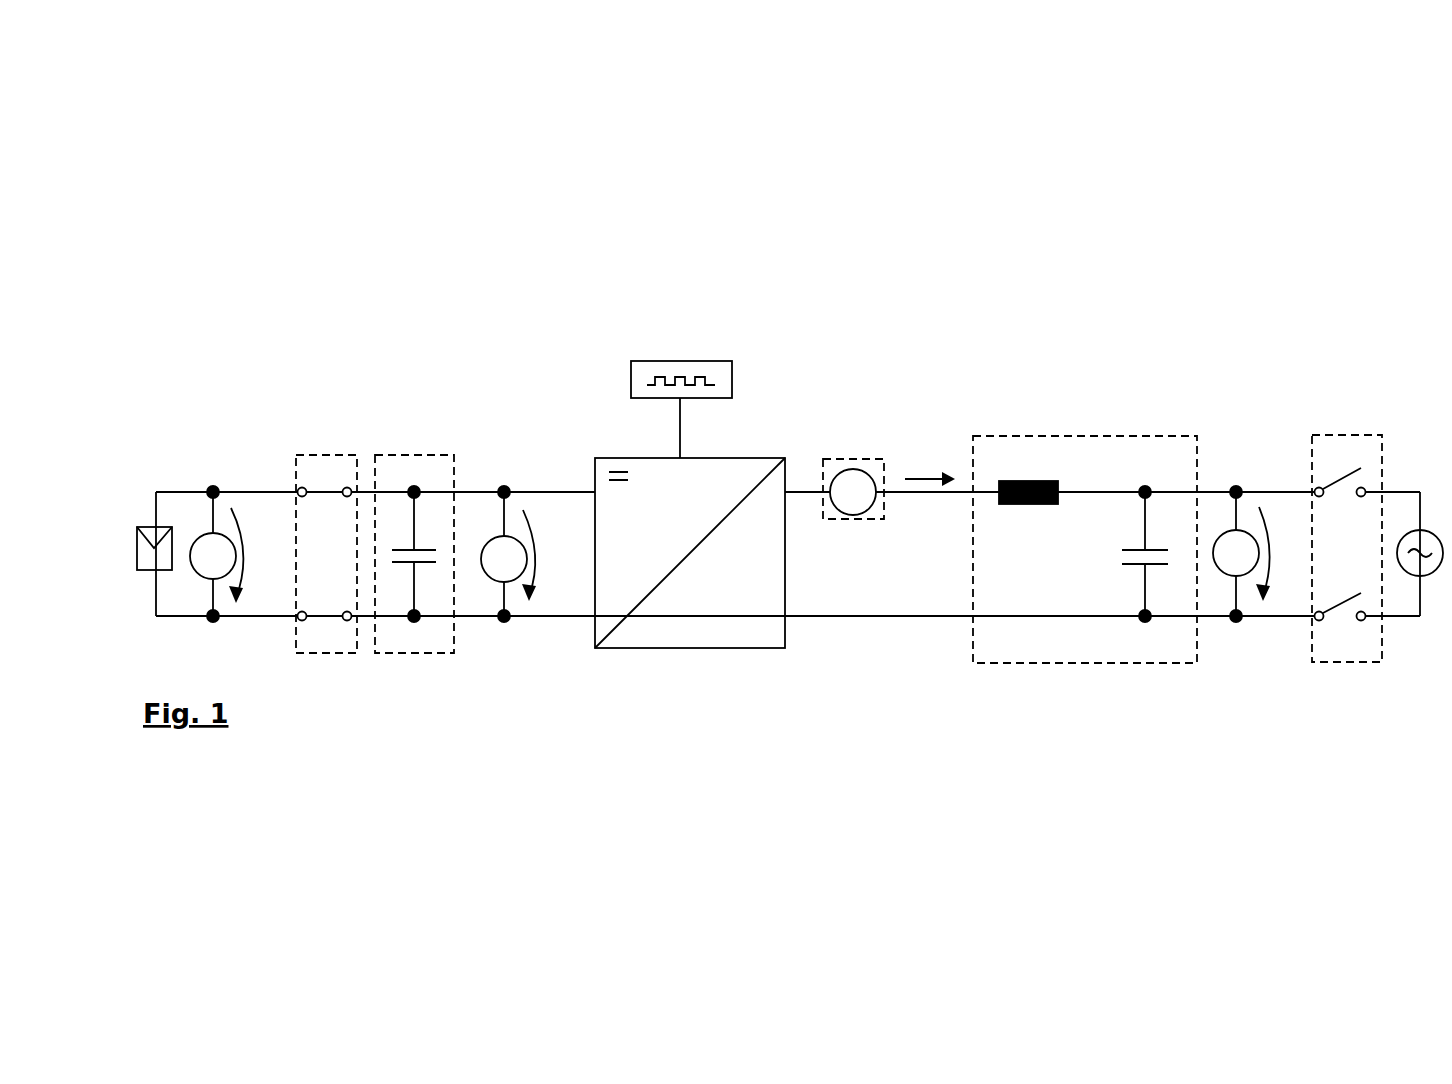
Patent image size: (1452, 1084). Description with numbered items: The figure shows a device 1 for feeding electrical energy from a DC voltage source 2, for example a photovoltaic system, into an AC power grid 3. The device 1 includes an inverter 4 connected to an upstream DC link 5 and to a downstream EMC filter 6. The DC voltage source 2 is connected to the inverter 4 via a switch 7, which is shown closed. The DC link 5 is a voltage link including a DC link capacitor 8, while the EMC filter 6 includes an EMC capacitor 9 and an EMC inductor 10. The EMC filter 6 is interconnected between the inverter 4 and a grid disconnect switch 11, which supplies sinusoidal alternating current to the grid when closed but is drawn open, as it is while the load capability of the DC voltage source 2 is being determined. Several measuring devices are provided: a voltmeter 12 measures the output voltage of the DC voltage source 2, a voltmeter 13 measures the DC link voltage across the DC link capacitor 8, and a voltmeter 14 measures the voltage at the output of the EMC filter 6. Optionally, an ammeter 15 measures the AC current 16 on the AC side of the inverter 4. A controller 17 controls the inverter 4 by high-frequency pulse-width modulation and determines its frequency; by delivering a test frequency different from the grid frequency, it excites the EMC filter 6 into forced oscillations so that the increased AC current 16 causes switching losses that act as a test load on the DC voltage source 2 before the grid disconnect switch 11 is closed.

The device 1 is at (1073, 255).
The DC voltage source 2 is at (143, 527).
The AC power grid 3 is at (1423, 533).
The inverter 4 is at (747, 452).
The DC link 5 is at (422, 561).
The EMC filter 6 is at (1085, 554).
The switch 7 is at (307, 653).
The DC link capacitor 8 is at (422, 543).
The EMC capacitor 9 is at (1152, 536).
The EMC inductor 10 is at (1038, 480).
The grid disconnect switch 11 is at (1323, 668).
The voltmeter 12 is at (203, 545).
The voltmeter 13 is at (518, 580).
The voltmeter 14 is at (1242, 578).
The ammeter 15 is at (855, 470).
The AC current 16 is at (925, 470).
The controller 17 is at (685, 353).